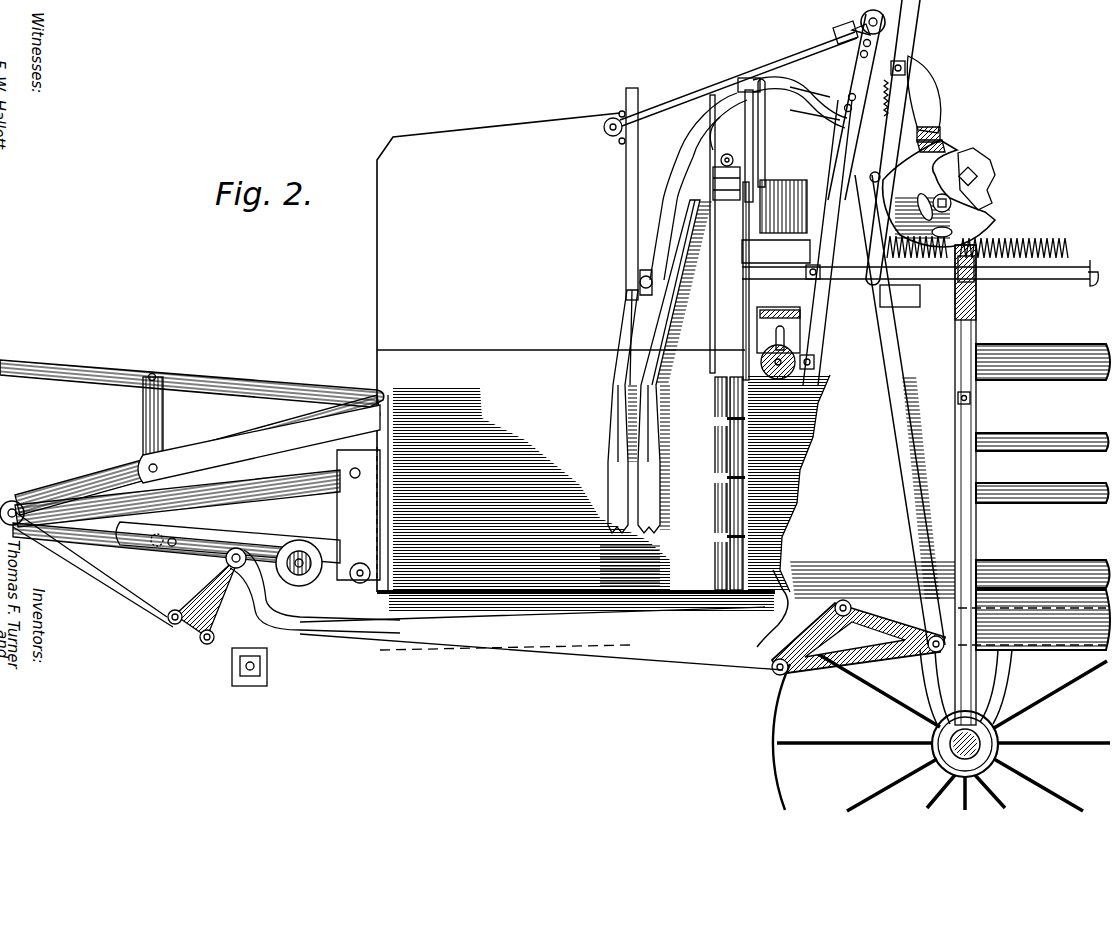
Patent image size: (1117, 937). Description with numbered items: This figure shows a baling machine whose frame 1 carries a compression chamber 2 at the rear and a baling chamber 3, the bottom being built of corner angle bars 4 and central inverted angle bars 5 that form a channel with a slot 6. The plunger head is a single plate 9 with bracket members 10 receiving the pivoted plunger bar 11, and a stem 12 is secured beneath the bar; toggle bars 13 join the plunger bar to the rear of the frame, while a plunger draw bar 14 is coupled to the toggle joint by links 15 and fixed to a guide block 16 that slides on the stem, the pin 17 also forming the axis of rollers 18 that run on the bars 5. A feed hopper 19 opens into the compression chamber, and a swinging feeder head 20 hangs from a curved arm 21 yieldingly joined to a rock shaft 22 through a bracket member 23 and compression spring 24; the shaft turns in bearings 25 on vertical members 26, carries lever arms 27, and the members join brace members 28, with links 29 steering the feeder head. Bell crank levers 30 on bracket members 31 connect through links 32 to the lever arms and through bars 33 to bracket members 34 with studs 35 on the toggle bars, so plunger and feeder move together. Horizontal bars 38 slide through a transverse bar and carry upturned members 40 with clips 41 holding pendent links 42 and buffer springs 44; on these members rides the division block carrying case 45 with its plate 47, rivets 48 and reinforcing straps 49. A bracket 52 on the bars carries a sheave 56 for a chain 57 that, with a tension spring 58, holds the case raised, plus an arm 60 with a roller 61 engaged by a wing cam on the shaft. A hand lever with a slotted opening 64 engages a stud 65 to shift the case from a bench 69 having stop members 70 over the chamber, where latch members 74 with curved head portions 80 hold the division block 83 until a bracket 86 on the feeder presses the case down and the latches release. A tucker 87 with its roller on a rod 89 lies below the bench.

The frame 1 is at (1032, 348).
The compression chamber 2 is at (378, 365).
The baling chamber 3 is at (1042, 514).
The corner angle bars 4 is at (1063, 565).
The inverted opposing angle bars 5 is at (1048, 642).
The slot 6 is at (512, 594).
The plate of plunger head 9 is at (358, 513).
The bracket members 10 is at (375, 425).
The plunger bar 11 is at (88, 500).
The stem 12 is at (147, 548).
The toggle bars 13 is at (115, 585).
The plunger draw bar 14 is at (680, 640).
The links 15 is at (115, 537).
The guide block 16 is at (250, 500).
The pin 17 is at (343, 509).
The rollers 18 is at (355, 523).
The feed hopper 19 is at (380, 269).
The swinging feeder head 20 is at (626, 96).
The curved arm 21 is at (793, 86).
The rock shaft 22 is at (988, 190).
The bracket member 23 is at (942, 140).
The compression spring 24 is at (912, 92).
The bearings 25 is at (962, 205).
The vertically arranged members 26 is at (975, 322).
The lever arms 27 is at (958, 153).
The brace members 28 is at (858, 68).
The links 29 is at (722, 84).
The bell crank levers 30 is at (858, 652).
The bracket members 31 is at (772, 608).
The links 32 is at (892, 412).
The longitudinally arranged bars 33 is at (588, 655).
The bracket members 34 is at (175, 628).
The studs 35 is at (226, 560).
The longitudinal horizontal bars 38 is at (1022, 283).
The upturned vertical members 40 is at (790, 60).
The clips 41 is at (748, 78).
The pendent links 42 is at (755, 130).
The buffer springs 44 is at (775, 145).
The division block carrying case 45 is at (708, 248).
The rear plate member 47 is at (710, 296).
The rivets 48 is at (752, 252).
The reinforcing straps 49 is at (688, 150).
The bracket 52 is at (843, 223).
The sheave 56 is at (776, 256).
The chain 57 is at (828, 165).
The tension spring 58 is at (1056, 255).
The forwardly projecting arm 60 is at (916, 253).
The roller 61 is at (870, 177).
The slotted opening 64 is at (895, 290).
The stud 65 is at (852, 272).
The bench 69 is at (802, 282).
The stop members 70 is at (740, 312).
The latch members 74 is at (766, 140).
The curved head portions 80 is at (705, 142).
The division block 83 is at (716, 548).
The bracket 86 is at (712, 120).
The tucker 87 is at (774, 338).
The transverse rod 89 is at (785, 372).